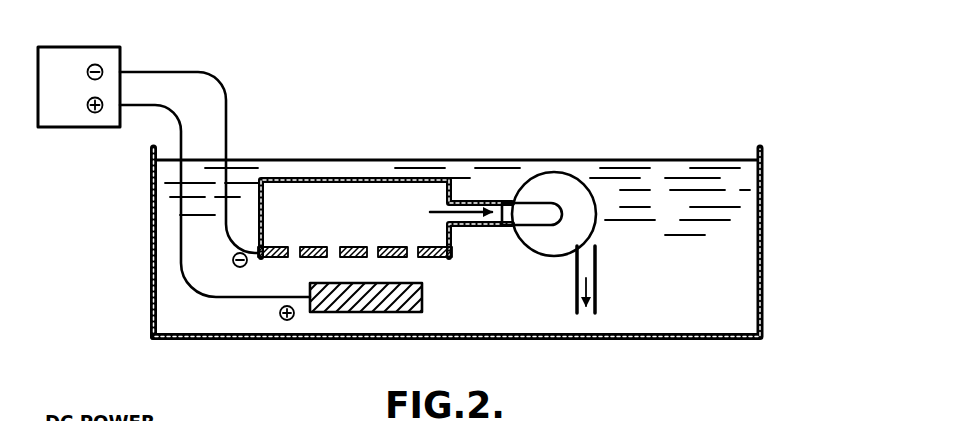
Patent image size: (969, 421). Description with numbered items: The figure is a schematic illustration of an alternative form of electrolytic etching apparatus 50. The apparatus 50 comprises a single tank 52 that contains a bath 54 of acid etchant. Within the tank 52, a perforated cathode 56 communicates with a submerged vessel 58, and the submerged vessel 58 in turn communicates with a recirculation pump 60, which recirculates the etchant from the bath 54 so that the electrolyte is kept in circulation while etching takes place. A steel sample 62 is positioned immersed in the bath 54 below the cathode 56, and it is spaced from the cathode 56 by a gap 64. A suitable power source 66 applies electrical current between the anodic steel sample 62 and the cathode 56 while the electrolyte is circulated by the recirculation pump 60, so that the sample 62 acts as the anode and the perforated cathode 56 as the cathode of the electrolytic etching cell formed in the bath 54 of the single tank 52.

The apparatus 50 is at (621, 139).
The tank 52 is at (150, 258).
The bath 54 is at (697, 292).
The cathode 56 is at (389, 246).
The submerged vessel 58 is at (322, 177).
The recirculation pump 60 is at (553, 187).
The steel sample 62 is at (358, 313).
The gap 64 is at (360, 280).
The power source 66 is at (52, 127).